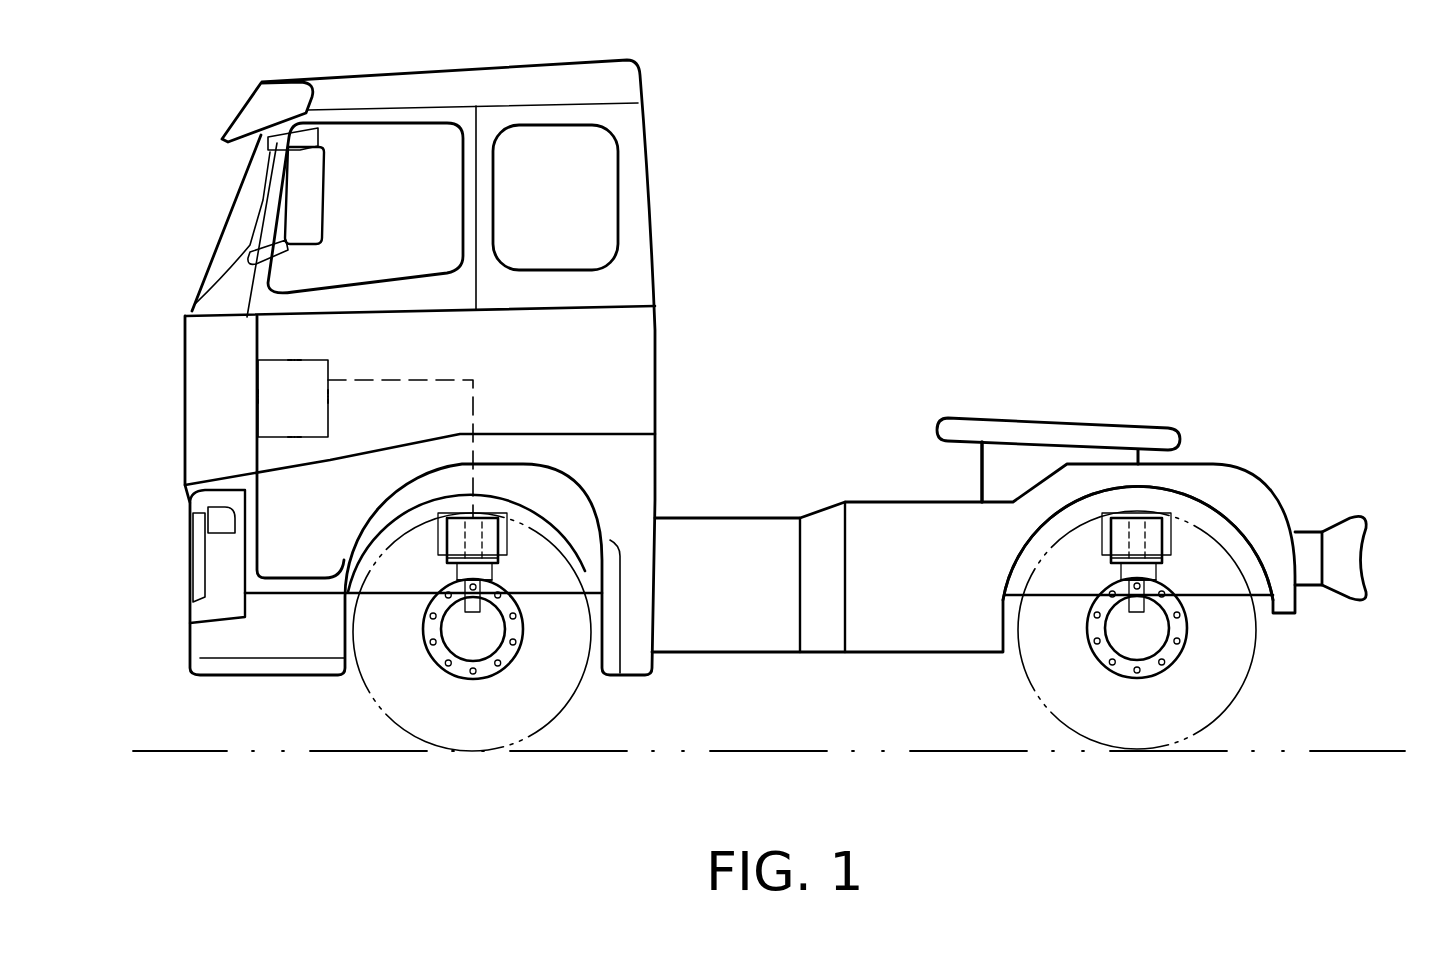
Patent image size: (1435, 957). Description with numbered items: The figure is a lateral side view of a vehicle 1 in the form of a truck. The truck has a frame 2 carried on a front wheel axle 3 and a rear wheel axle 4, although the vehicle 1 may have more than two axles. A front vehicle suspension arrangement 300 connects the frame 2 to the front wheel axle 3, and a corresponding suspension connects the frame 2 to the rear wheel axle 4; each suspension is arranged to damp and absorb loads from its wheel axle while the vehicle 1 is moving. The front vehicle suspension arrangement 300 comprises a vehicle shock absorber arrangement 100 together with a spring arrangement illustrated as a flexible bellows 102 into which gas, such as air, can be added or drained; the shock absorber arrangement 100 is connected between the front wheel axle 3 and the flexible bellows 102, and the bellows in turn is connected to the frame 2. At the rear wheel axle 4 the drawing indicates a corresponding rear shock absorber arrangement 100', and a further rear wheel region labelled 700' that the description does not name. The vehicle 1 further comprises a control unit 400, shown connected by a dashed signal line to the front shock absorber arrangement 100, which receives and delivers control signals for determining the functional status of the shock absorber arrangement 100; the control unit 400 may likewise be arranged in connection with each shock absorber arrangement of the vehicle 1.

The vehicle 1 is at (779, 91).
The frame 2 is at (575, 548).
The front wheel axle 3 is at (473, 630).
The rear wheel axle 4 is at (1135, 628).
The vehicle shock absorber arrangement 100 is at (602, 494).
The rear sensor unit 100' is at (1223, 515).
The flexible bellows 102 is at (432, 575).
The front vehicle suspension arrangement 300 is at (458, 540).
The control unit 400 is at (267, 358).
The rear wheel region 700' is at (1186, 662).